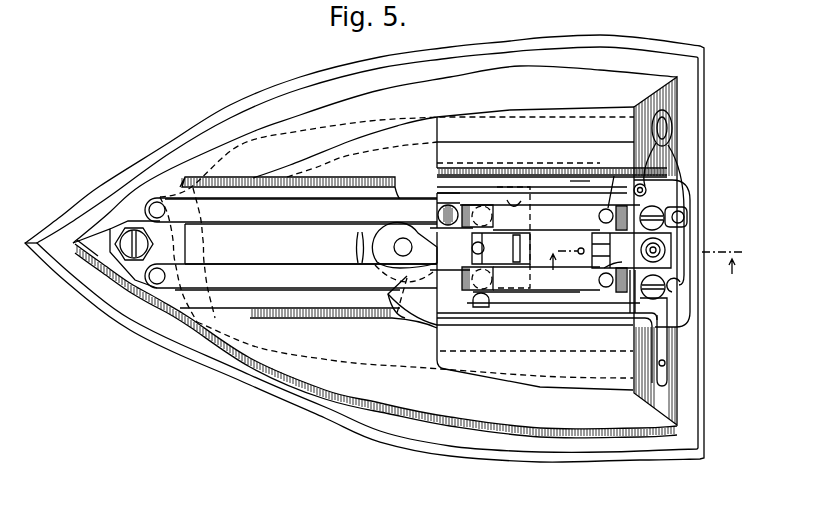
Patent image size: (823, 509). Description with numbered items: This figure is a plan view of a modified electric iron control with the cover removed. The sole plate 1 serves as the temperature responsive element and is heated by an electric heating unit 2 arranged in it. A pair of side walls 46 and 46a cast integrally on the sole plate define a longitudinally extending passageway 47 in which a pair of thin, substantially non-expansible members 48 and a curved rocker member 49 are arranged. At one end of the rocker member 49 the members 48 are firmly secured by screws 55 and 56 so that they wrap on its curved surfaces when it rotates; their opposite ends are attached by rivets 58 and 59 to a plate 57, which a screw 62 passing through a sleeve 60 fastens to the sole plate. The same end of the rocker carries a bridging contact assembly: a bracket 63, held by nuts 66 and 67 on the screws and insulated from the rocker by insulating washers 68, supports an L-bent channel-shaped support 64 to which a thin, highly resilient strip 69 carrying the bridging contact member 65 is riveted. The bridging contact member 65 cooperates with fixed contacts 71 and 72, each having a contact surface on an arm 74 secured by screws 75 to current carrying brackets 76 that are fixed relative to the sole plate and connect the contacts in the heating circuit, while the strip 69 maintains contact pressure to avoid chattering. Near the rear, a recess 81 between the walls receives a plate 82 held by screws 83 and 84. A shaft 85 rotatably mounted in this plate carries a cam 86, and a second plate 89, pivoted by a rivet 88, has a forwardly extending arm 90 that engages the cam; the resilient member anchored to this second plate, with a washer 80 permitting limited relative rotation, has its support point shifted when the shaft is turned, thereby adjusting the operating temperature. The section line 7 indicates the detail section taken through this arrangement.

The sole plate 1 is at (325, 418).
The electric heating unit 2 is at (300, 356).
The side wall 46 is at (352, 178).
The side wall 46a is at (328, 312).
The passageway 47 is at (267, 300).
The members 48 is at (275, 250).
The rocker member 49 is at (533, 180).
The screw 55 is at (633, 214).
The screw 56 is at (631, 282).
The plate 57 is at (136, 218).
The rivet 58 is at (157, 284).
The rivet 59 is at (160, 200).
The sleeve 60 is at (137, 263).
The screw 62 is at (125, 248).
The bracket 63 is at (620, 287).
The channel-shaped support 64 is at (540, 236).
The bridging contact member 65 is at (472, 276).
The nut 66 is at (600, 217).
The nut 67 is at (601, 279).
The insulating washers 68 is at (609, 207).
The resilient strip 69 is at (471, 233).
The section line 7- 7 is at (647, 255).
The fixed contact 71 is at (460, 294).
The fixed contact 72 is at (492, 206).
The arm 74 is at (445, 197).
The screws 75 is at (437, 216).
The current carrying brackets 76 is at (462, 192).
The washer 80 is at (664, 234).
The recess 81 is at (513, 203).
The plate 82 is at (660, 306).
The screw 83 is at (662, 302).
The screw 84 is at (662, 200).
The shaft 85 is at (394, 246).
The cam 86 is at (375, 256).
The rivet 88 is at (646, 189).
The second plate 89 is at (577, 178).
The arm 90 is at (407, 288).